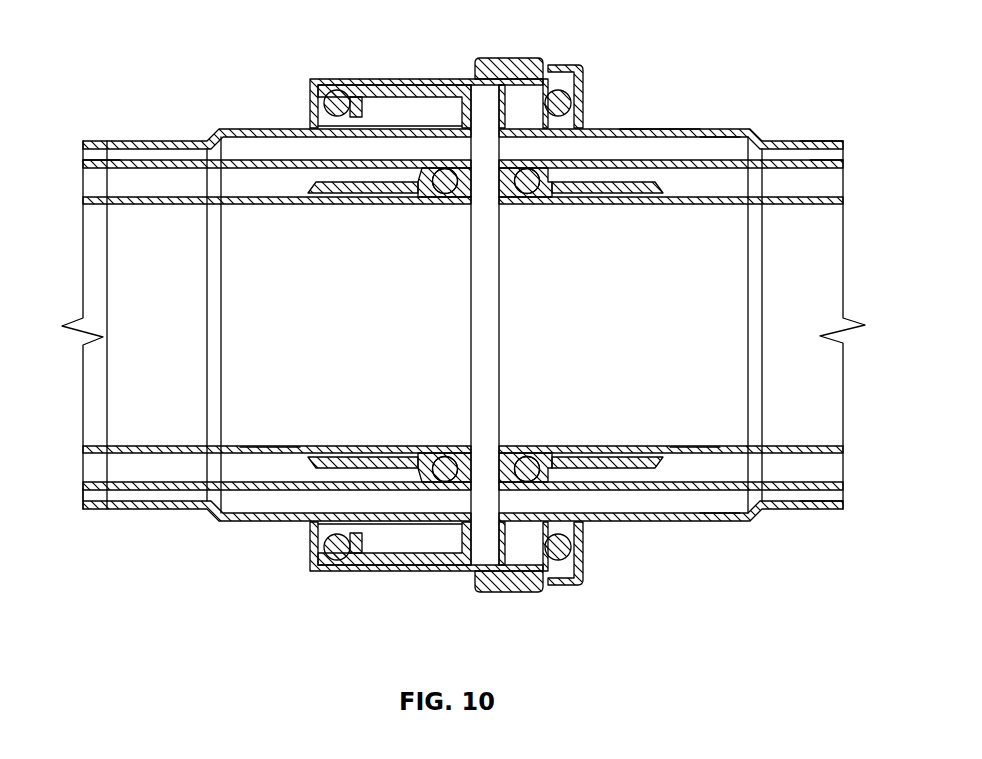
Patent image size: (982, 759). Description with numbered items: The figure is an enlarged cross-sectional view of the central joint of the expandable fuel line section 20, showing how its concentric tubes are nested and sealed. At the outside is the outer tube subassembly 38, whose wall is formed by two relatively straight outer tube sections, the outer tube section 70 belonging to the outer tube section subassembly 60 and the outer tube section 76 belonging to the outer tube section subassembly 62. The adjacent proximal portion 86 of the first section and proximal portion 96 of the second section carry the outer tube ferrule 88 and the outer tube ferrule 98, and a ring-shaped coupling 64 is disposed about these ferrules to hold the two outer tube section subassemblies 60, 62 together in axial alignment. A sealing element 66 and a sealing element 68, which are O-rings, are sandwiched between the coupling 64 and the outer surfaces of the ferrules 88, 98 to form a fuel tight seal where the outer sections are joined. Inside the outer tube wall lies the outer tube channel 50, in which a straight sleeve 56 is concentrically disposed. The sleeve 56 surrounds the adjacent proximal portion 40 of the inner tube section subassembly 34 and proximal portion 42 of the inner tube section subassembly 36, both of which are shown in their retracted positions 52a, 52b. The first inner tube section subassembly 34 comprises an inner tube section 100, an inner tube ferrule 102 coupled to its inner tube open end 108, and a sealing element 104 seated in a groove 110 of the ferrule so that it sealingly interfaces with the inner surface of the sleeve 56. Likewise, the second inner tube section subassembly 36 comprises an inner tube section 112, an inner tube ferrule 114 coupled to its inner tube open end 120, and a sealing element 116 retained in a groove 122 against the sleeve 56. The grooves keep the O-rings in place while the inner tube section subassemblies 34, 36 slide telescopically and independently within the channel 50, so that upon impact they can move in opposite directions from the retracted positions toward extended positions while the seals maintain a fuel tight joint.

The expandable fuel line section 20 is at (758, 52).
The inner tube section subassembly 34 is at (83, 198).
The inner tube section subassembly 36 is at (805, 204).
The outer tube subassembly 38 is at (645, 128).
The proximal portion 40 is at (270, 450).
The proximal portion 42 is at (668, 452).
The outer tube channel 50 is at (787, 180).
The retracted position 52a is at (268, 190).
The retracted position 52b is at (740, 215).
The sleeve 56 is at (122, 160).
The outer tube section subassembly 60 is at (92, 495).
The outer tube section subassembly 62 is at (823, 508).
The coupling 64 is at (430, 80).
The sealing element 66 is at (340, 92).
The sealing element 68 is at (578, 68).
The outer tube section 70 is at (132, 142).
The outer tube section 76 is at (822, 146).
The proximal portion 86 is at (103, 503).
The outer tube ferrule 88 is at (263, 128).
The proximal portion 96 is at (768, 142).
The outer tube ferrule 98 is at (695, 128).
The inner tube section 100 is at (270, 448).
The inner tube ferrule 102 is at (333, 205).
The sealing element 104 is at (442, 200).
The inner tube open end 108 is at (440, 455).
The groove 110 is at (432, 180).
The inner tube section 112 is at (683, 447).
The inner tube ferrule 114 is at (625, 182).
The sealing element 116 is at (528, 203).
The inner tube open end 120 is at (527, 455).
The groove 122 is at (541, 176).